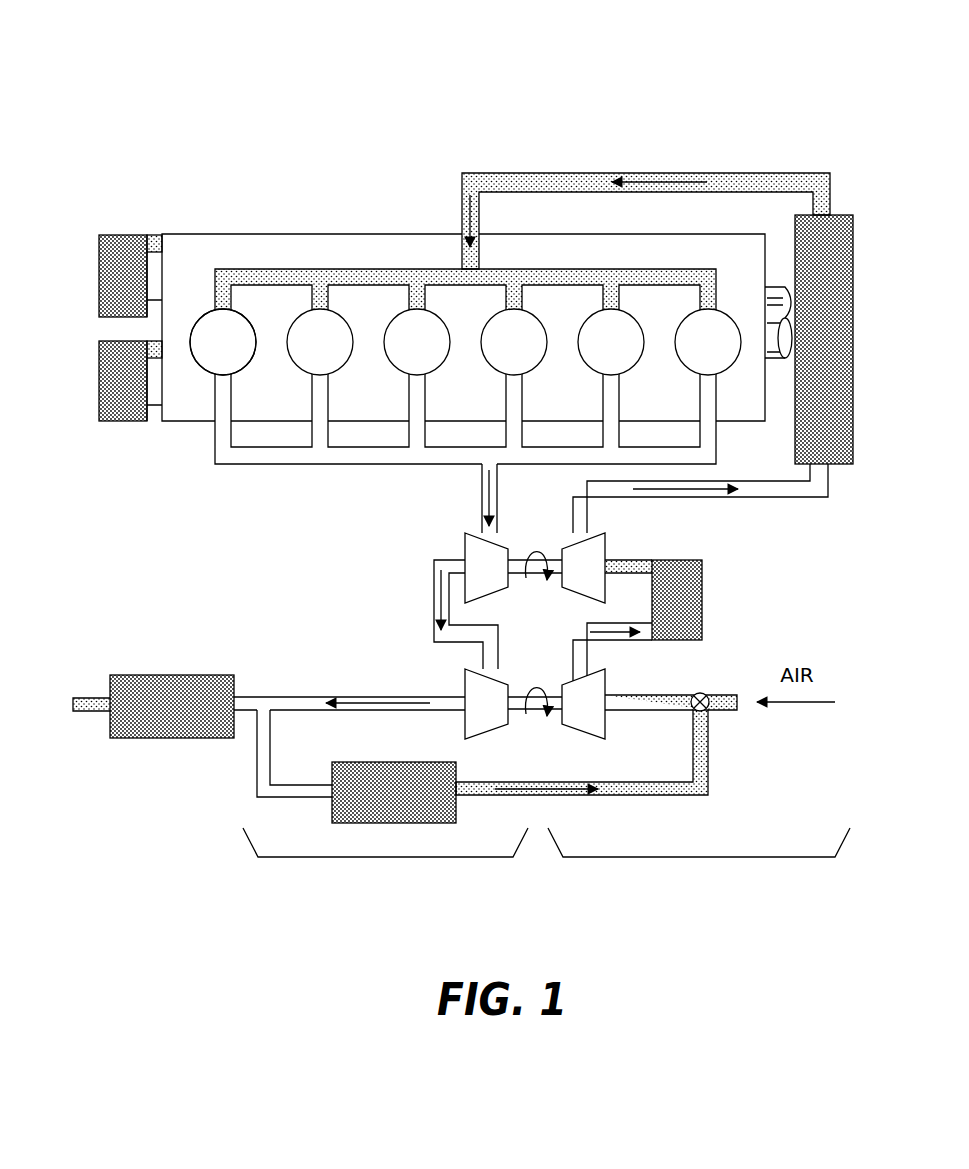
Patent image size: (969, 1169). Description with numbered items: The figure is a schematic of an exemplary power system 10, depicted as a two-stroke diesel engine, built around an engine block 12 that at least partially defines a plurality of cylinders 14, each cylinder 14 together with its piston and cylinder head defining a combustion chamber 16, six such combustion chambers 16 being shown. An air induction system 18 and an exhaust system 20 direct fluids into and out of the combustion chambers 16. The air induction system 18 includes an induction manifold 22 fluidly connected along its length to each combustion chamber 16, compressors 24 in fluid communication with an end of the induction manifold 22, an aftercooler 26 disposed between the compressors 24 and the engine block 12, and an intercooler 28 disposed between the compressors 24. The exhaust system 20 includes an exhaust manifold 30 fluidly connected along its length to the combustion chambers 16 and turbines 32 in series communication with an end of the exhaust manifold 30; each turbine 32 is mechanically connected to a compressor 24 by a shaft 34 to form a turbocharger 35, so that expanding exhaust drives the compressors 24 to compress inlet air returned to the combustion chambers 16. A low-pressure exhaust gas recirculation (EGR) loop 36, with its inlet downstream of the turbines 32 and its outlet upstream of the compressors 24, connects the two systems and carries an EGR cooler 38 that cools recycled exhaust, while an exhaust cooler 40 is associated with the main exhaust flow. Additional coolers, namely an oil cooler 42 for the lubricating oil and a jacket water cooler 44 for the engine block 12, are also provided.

The power system 10 is at (276, 82).
The engine block 12 is at (185, 263).
The cylinder 14 is at (199, 323).
The combustion chamber 16 is at (720, 353).
The air induction system 18 is at (716, 857).
The exhaust system 20 is at (395, 857).
The induction manifold 22 is at (468, 272).
The compressor 24 is at (580, 592).
The aftercooler 26 is at (831, 214).
The intercooler 28 is at (685, 560).
The exhaust manifold 30 is at (487, 458).
The turbine 32 is at (496, 592).
The shaft 34 is at (520, 550).
The turbocharger 35 is at (579, 628).
The exhaust gas recirculation (EGR) loop 36 is at (708, 793).
The EGR cooler 38 is at (332, 820).
The exhaust cooler 40 is at (160, 675).
The oil cooler 42 is at (99, 283).
The jacket water cooler 44 is at (99, 364).